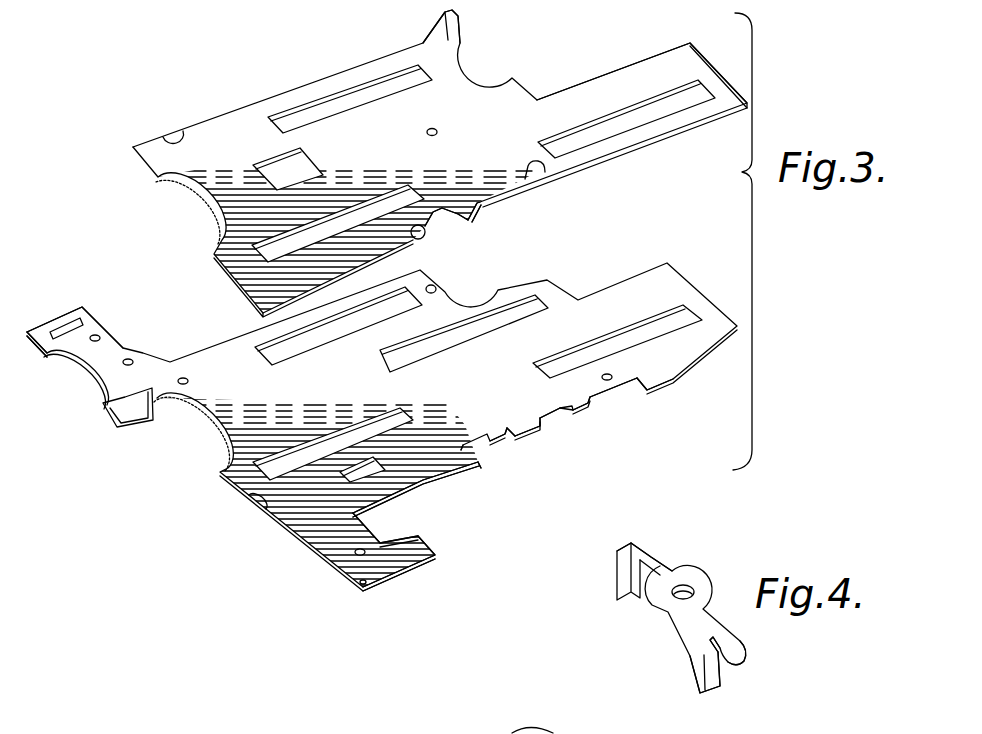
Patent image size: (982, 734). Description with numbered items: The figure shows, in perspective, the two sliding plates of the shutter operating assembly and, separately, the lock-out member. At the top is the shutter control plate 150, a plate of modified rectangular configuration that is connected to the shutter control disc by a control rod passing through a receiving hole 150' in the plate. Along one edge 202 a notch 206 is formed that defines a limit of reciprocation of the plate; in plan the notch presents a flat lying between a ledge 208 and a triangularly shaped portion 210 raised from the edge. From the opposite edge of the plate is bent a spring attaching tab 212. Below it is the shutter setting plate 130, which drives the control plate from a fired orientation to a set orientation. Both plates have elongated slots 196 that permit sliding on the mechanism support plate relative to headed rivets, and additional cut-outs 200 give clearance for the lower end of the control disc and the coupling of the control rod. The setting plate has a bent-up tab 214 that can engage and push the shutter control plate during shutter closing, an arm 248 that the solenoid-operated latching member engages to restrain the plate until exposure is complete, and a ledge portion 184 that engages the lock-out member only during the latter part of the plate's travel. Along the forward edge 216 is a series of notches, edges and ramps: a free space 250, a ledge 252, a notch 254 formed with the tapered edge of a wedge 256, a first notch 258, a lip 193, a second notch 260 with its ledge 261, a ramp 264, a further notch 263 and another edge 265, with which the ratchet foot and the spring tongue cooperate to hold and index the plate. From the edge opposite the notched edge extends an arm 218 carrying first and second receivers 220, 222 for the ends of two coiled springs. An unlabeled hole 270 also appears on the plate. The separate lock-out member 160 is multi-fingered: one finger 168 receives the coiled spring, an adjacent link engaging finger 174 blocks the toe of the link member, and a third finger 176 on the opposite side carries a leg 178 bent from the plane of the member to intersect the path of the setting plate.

In FIG. 3, the shutter setting plate 130 is at (313, 494).
In FIG. 3, the shutter control plate 150 is at (435, 167).
In FIG. 3, the receiving hole 150' is at (399, 131).
In FIG. 3, the ledge portion 184 is at (382, 377).
In FIG. 3, the lip 193 is at (492, 432).
In FIG. 3, the elongated slots 196 is at (357, 90).
In FIG. 3, the cut-outs 200 is at (268, 162).
In FIG. 3, the edge 202 is at (680, 137).
In FIG. 3, the notch 206 is at (447, 217).
In FIG. 3, the ledge 208 is at (425, 240).
In FIG. 3, the triangularly shaped portion 210 is at (472, 212).
In FIG. 3, the spring attaching tab 212 is at (440, 22).
In FIG. 3, the bent-up tab 214 is at (104, 405).
In FIG. 3, the forward edge 216 is at (575, 438).
In FIG. 3, the arm 218 is at (97, 314).
In FIG. 3, the first receiver 220 is at (133, 359).
In FIG. 3, the second receiver 222 is at (100, 338).
In FIG. 3, the arm 248 is at (430, 547).
In FIG. 3, the free space 250 is at (363, 518).
In FIG. 3, the ledge 252 is at (426, 481).
In FIG. 3, the notch 254 is at (445, 471).
In FIG. 3, the wedge 256 is at (463, 442).
In FIG. 3, the first notch 258 is at (487, 448).
In FIG. 3, the second notch 260 is at (550, 425).
In FIG. 3, the ledge 261 is at (540, 420).
In FIG. 3, the notch 263 is at (632, 395).
In FIG. 3, the ramp 264 is at (587, 405).
In FIG. 3, the edge 265 is at (603, 400).
In FIG. 3, the hole 270 is at (427, 486).
In FIG. 4, the lock-out member 160 is at (679, 627).
In FIG. 4, the finger 168 is at (746, 660).
In FIG. 4, the link engaging finger 174 is at (703, 672).
In FIG. 4, the third finger 176 is at (652, 558).
In FIG. 4, the leg 178 is at (619, 588).